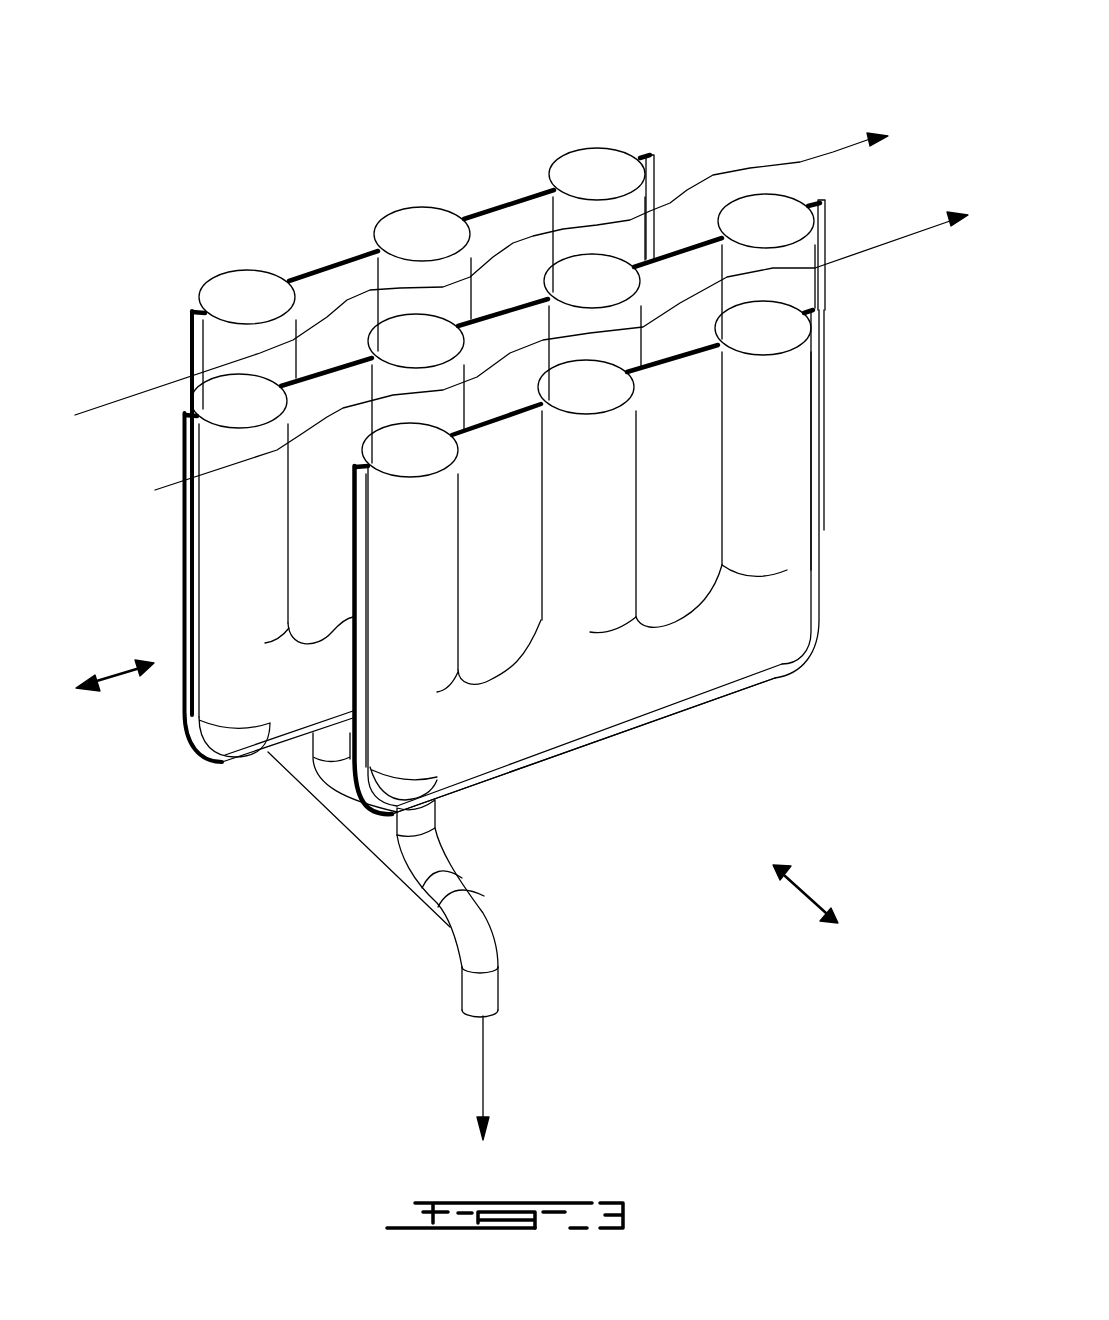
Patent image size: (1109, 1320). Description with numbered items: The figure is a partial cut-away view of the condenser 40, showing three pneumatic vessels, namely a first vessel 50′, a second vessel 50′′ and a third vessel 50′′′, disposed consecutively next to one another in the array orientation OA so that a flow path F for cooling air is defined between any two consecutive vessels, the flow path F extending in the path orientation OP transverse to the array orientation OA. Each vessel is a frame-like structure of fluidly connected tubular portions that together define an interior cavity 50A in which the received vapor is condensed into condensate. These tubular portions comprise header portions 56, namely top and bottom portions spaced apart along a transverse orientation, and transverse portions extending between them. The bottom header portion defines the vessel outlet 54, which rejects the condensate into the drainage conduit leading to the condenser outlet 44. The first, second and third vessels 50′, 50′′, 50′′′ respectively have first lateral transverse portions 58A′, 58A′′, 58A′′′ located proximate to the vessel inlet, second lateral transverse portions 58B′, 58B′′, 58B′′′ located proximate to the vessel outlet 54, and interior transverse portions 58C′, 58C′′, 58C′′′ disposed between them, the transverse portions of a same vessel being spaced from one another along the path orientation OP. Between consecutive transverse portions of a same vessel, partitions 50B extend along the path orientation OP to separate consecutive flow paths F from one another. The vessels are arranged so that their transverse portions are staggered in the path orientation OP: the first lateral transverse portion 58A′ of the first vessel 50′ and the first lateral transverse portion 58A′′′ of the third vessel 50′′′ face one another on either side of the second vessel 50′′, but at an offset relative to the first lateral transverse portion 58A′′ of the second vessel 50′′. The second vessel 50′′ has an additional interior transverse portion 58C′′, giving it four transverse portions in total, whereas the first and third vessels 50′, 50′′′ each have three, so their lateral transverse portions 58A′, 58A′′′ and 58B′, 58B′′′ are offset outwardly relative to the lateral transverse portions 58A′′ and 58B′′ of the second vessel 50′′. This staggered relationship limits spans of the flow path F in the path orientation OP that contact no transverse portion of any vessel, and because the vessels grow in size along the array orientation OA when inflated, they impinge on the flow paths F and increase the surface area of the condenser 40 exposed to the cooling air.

The condenser 40 is at (190, 152).
The interior cavity 50A is at (258, 272).
The partitions 50B is at (702, 488).
The first vessel 50′ is at (880, 372).
The second vessel 50′′ is at (912, 176).
The third vessel 50′′′ is at (747, 112).
The first lateral transverse portion of the first vessel 58A′ is at (780, 493).
The first lateral transverse portion of the second vessel 58A′′ is at (797, 286).
The first lateral transverse portion of the third vessel 58A′′′ is at (641, 202).
The second lateral transverse portion of the first vessel 58B′ is at (403, 572).
The second lateral transverse portion of the second vessel 58B′′ is at (217, 528).
The second lateral transverse portion of the third vessel 58B′′′ is at (222, 333).
The interior transverse portion of the first vessel 58C′ is at (603, 562).
The interior transverse portion of the second vessel 58C′′ is at (583, 328).
The interior transverse portion of the third vessel 58C′′′ is at (398, 272).
The vessel outlet 54 is at (437, 812).
The header portions 56 is at (620, 700).
The condenser outlet 44 is at (488, 987).
The flow path F is at (102, 405).
The path orientation OP is at (115, 710).
The array orientation OA is at (815, 878).